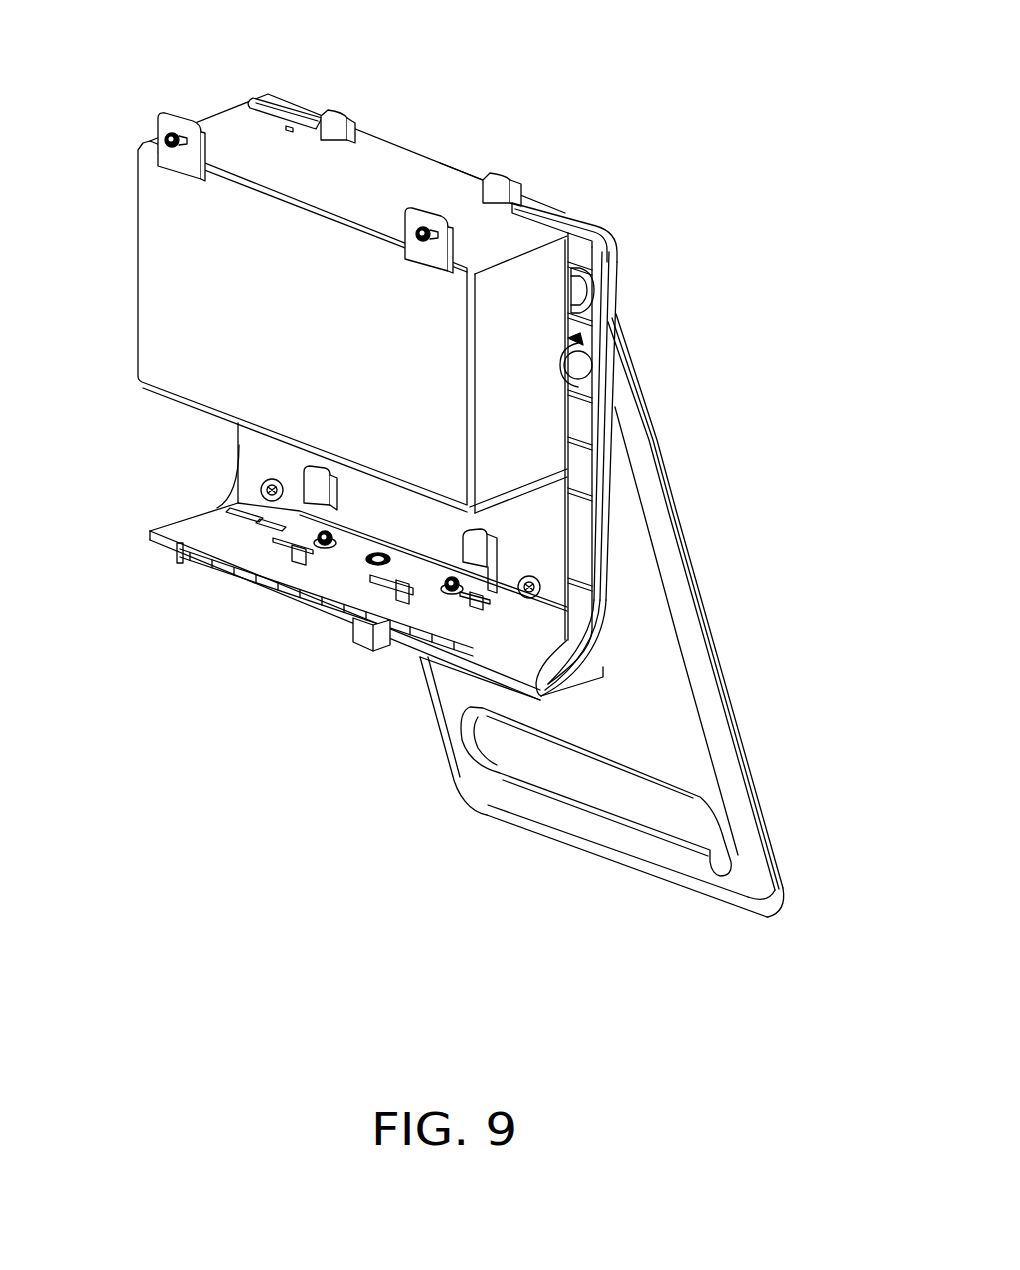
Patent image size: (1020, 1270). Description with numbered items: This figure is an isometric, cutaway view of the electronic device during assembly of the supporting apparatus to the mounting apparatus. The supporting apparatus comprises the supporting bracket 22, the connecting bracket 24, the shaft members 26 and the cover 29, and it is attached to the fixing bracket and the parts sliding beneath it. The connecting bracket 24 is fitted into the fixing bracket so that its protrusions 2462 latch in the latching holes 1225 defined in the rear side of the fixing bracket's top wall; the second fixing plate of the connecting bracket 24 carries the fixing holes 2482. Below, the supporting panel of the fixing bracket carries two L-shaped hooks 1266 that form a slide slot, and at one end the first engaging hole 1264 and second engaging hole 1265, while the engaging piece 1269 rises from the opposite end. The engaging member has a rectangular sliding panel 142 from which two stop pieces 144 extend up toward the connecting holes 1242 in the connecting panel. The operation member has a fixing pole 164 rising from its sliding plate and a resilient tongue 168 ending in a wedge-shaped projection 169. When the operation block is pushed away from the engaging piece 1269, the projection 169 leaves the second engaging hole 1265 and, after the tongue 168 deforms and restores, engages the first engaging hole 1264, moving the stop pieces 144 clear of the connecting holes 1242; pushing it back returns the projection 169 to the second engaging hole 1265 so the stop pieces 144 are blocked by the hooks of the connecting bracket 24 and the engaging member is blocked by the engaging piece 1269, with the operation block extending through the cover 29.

The connecting bracket 24 is at (397, 170).
The latching holes 1225 is at (480, 177).
The protrusions 2462 is at (507, 172).
The cover 29 is at (583, 217).
The supporting bracket 22 is at (640, 463).
The shaft members 26 is at (580, 367).
The fixing holes 2482 is at (478, 548).
The connecting holes 1242 is at (500, 552).
The stop pieces 144 is at (455, 590).
The engaging piece 1269 is at (565, 633).
The first engaging hole 1264 is at (240, 513).
The second engaging hole 1265 is at (232, 531).
The resilient tongue 168 is at (268, 518).
The L-shaped hooks 1266 is at (285, 530).
The sliding panel 142 is at (338, 556).
The fixing pole 164 is at (348, 556).
The projection 169 is at (353, 630).